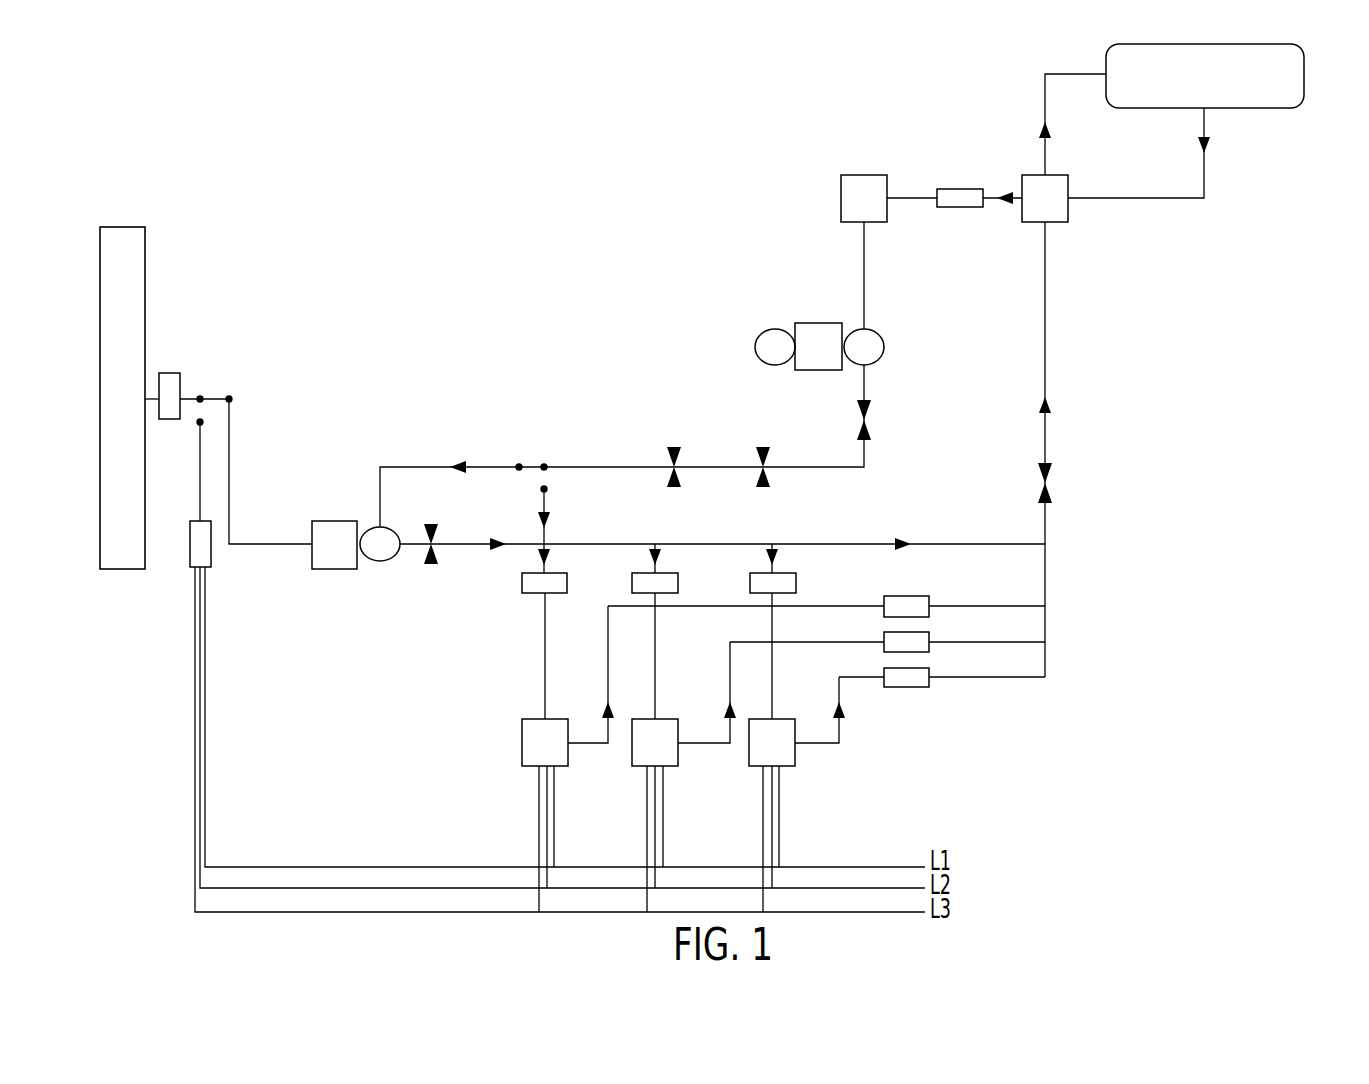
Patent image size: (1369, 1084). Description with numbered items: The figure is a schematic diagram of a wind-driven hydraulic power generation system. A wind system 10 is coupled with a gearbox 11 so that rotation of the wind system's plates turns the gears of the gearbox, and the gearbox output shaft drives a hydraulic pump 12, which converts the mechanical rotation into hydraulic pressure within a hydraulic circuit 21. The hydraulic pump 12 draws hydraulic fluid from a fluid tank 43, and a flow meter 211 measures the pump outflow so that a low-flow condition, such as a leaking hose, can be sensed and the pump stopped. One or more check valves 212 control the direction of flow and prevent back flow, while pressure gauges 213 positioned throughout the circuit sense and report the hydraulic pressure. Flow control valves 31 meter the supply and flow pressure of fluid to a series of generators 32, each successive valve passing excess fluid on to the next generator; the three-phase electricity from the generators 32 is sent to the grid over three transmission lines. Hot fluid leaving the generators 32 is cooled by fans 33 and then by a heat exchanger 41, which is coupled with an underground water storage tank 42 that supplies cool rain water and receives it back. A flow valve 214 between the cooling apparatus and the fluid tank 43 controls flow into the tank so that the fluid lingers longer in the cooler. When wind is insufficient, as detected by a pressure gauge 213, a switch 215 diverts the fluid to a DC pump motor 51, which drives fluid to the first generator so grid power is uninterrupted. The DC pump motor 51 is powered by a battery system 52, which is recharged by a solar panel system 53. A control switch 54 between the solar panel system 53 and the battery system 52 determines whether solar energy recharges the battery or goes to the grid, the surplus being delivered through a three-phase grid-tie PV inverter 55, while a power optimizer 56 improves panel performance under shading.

The wind system 10 is at (757, 345).
The gearbox 11 is at (815, 323).
The hydraulic pump 12 is at (884, 350).
The hydraulic circuit 21 is at (1048, 360).
The flow meter 211 is at (866, 440).
The check valve 212 is at (672, 447).
The pressure gauge 213 is at (428, 565).
The flow valve 214 is at (962, 189).
The switch 215 is at (542, 484).
The flow control valve 31 is at (765, 594).
The generator 32 is at (755, 768).
The fan 33 is at (929, 613).
The heat exchanger 41 is at (1068, 210).
The underground water storage tank 42 is at (1305, 83).
The fluid tank 43 is at (864, 175).
The DC pump motor 51 is at (368, 530).
The battery system 52 is at (312, 560).
The solar panel system 53 is at (100, 540).
The control switch 54 is at (204, 396).
The grid-tie PV inverter 55 is at (190, 555).
The power optimizer 56 is at (170, 373).